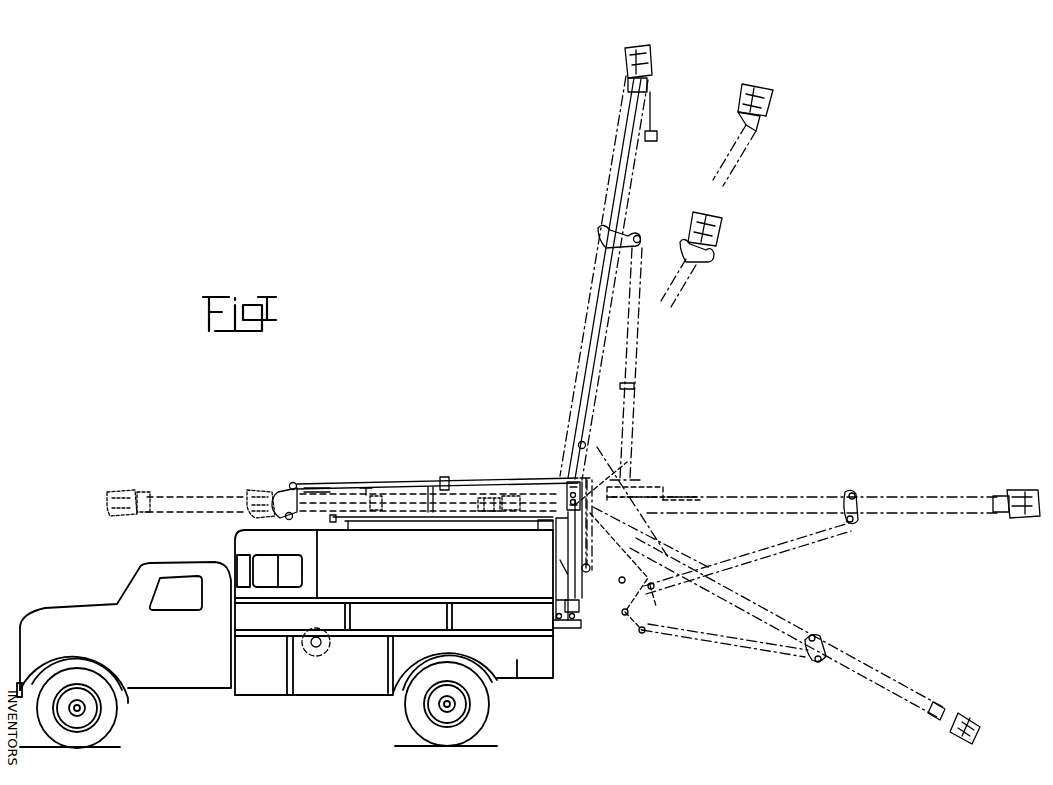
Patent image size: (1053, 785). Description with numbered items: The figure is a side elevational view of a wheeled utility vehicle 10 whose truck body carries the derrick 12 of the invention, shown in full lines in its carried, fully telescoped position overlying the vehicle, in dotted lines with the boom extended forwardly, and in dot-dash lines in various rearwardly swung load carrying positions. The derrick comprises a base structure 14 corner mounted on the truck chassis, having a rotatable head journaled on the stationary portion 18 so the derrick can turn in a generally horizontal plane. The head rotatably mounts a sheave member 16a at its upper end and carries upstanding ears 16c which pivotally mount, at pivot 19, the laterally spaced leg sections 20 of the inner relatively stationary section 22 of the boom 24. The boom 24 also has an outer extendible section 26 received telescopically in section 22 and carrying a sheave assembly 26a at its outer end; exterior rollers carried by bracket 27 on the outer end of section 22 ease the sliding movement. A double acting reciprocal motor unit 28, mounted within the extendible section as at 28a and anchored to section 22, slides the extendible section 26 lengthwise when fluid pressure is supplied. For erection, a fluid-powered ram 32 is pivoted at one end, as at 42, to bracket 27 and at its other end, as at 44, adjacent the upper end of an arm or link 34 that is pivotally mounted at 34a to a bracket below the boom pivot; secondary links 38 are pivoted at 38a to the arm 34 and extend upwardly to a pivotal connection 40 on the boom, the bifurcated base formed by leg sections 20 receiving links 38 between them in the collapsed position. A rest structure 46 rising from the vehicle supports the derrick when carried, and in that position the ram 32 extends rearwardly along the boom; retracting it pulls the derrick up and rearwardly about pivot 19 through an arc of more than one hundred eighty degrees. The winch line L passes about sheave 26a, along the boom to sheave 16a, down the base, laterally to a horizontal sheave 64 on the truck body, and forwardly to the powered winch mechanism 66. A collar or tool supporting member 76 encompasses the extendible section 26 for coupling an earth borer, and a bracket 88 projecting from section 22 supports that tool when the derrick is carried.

The wheeled utility vehicle 10 is at (324, 701).
The derrick 12 is at (408, 481).
The base structure 14 is at (579, 604).
The sheave member 16a is at (568, 494).
The upstanding ears 16c is at (551, 530).
The stationary portion 18 is at (556, 565).
The pivotal connection 19 is at (575, 494).
The leg sections 20 is at (522, 496).
The relatively stationary boom section 22 is at (325, 505).
The boom 24 is at (300, 490).
The extendible boom section 26 is at (199, 493).
The sheave assembly 26a is at (253, 489).
The bracket 27 is at (299, 522).
The reciprocal motor unit 28 is at (380, 494).
The motor unit mounting 28a is at (370, 487).
The motor unit or ram 32 is at (469, 478).
The arm or link 34 is at (594, 572).
The pivot 34a is at (588, 573).
The secondary arms or links 38 is at (603, 488).
The pivotal connection 38a is at (580, 504).
The pivotal connection 40 is at (503, 494).
The pivotal connection 42 is at (294, 483).
The pivotal connection 44 is at (592, 476).
The support or rest structure 46 is at (342, 519).
The rotatable sheave 64 is at (580, 625).
The winch mechanism 66 is at (306, 634).
The collar or tool supporting member 76 is at (283, 493).
The arm or bracket 88 is at (444, 477).
The winch line L is at (650, 93).